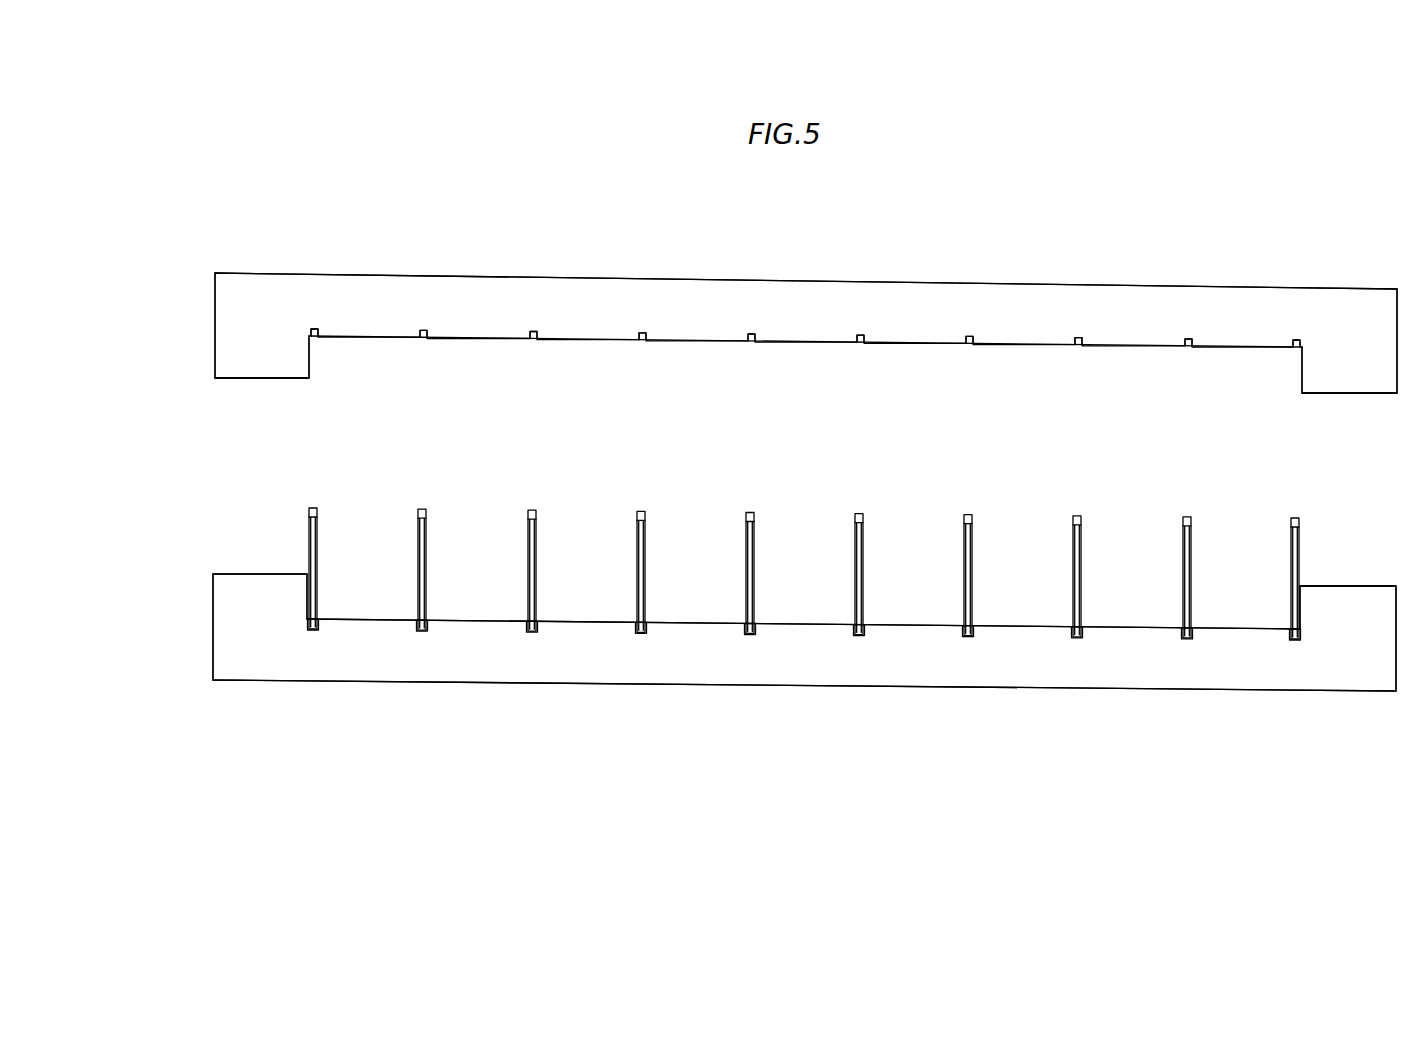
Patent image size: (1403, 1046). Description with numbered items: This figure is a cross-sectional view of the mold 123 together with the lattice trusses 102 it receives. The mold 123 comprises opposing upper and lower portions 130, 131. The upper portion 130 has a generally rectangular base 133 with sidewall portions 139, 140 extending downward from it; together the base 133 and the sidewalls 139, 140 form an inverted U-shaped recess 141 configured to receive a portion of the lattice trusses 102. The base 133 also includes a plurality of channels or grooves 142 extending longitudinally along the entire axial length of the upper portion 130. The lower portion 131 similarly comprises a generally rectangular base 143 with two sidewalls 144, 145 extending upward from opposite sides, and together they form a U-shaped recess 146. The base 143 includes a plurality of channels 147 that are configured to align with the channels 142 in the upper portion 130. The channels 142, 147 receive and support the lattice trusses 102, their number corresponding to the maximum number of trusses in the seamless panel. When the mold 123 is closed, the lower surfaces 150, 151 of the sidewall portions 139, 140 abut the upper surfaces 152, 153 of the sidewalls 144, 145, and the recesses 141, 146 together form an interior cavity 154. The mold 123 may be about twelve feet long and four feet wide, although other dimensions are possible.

The mold 123 is at (242, 166).
The upper portion 130 is at (1023, 239).
The lower portion 131 is at (1024, 732).
The rectangular base 133 is at (840, 295).
The sidewall portion 139 is at (258, 358).
The sidewall portion 140 is at (1345, 365).
The inverted U-shaped recess 141 is at (1249, 360).
The channels or grooves 142 is at (752, 334).
The rectangular base 143 is at (885, 656).
The sidewall 144 is at (262, 608).
The sidewall 145 is at (1348, 605).
The U-shaped recess 146 is at (1239, 599).
The channels 147 is at (640, 633).
The lower surface 150 is at (262, 378).
The lower surface 151 is at (1345, 394).
The upper surface 152 is at (262, 573).
The upper surface 153 is at (1348, 586).
The interior cavity 154 is at (686, 369).
The lattice trusses 102 is at (307, 528).